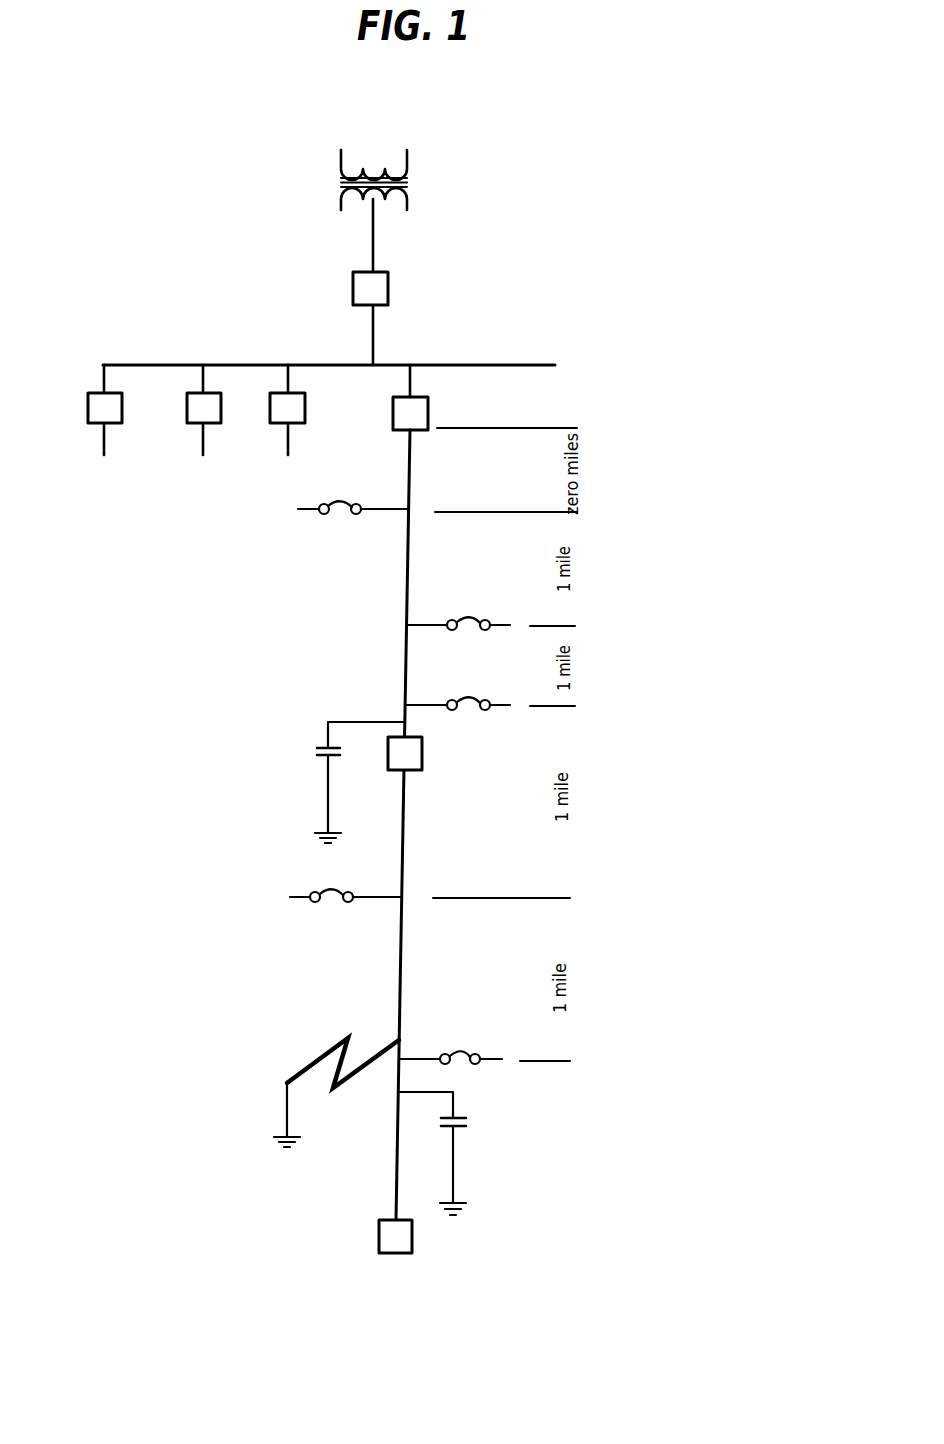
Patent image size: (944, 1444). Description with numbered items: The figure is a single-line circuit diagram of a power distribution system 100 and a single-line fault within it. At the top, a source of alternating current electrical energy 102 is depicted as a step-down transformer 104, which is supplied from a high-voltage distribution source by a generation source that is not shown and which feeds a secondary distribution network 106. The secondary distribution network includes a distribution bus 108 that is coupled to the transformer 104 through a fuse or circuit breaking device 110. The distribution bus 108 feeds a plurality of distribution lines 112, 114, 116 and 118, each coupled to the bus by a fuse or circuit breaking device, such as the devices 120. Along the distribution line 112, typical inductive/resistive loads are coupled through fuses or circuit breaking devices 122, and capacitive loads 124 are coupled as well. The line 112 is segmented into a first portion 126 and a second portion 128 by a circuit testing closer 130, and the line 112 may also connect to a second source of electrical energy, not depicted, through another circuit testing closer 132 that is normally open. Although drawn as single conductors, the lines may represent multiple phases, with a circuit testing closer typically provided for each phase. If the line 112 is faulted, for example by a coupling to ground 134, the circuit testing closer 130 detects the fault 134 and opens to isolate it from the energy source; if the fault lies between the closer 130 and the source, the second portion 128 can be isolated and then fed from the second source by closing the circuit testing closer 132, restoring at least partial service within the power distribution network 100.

The power distribution system 100 is at (662, 230).
The source of alternating current electrical energy 102 is at (395, 173).
The step-down transformer 104 is at (338, 184).
The secondary distribution network 106 is at (513, 338).
The distribution bus 108 is at (530, 372).
The fuse or circuit breaking device 110 is at (376, 286).
The distribution line 112 is at (412, 458).
The distribution line 114 is at (288, 447).
The distribution line 116 is at (203, 440).
The distribution line 118 is at (104, 440).
The fuse or circuit breaking devices 120 is at (100, 408).
The fuse or circuit breaking devices 122 is at (336, 515).
The capacitive loads 124 is at (318, 752).
The first portion 126 is at (350, 631).
The second portion 128 is at (340, 940).
The circuit testing closer 130 is at (412, 773).
The circuit testing closer 132 is at (412, 1238).
The fault (coupling to ground) 134 is at (285, 1082).